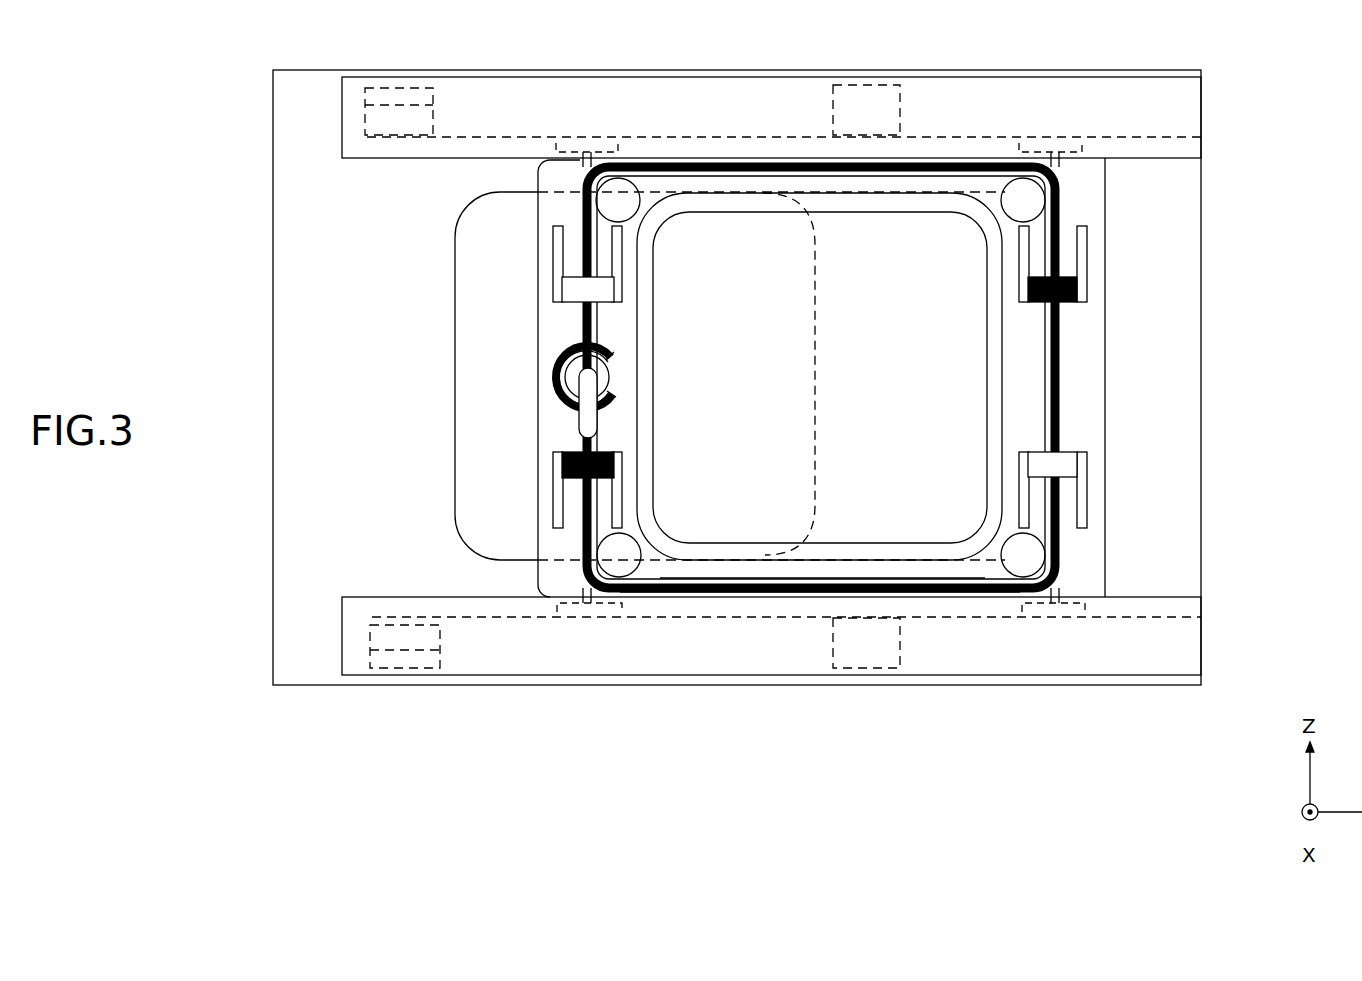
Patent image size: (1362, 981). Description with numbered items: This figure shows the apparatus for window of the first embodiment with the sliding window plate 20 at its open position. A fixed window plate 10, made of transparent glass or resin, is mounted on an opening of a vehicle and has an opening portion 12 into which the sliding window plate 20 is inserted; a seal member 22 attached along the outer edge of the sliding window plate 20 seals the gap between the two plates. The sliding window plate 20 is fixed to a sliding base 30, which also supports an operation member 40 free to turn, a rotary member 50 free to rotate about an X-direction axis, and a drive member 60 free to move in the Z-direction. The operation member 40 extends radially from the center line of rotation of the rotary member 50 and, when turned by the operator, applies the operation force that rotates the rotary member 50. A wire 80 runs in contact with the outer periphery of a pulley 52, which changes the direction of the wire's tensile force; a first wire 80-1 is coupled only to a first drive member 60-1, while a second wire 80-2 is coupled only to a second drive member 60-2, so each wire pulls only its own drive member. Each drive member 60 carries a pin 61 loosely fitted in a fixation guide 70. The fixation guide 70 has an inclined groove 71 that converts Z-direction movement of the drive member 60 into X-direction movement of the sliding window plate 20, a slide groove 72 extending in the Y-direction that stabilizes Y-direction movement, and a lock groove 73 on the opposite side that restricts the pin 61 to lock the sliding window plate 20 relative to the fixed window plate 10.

The fixed window plate 10 is at (1192, 388).
The opening portion 12 is at (455, 230).
The sliding window plate 20 is at (818, 232).
The seal member 22 is at (766, 200).
The sliding base 30 is at (709, 175).
The operation member 40 is at (558, 355).
The rotary member 50 is at (583, 383).
The pulley 52 is at (642, 193).
The drive member 60 is at (688, 378).
The first drive member 60-1 is at (556, 290).
The second drive member 60-2 is at (556, 465).
The pin 61 is at (604, 178).
The fixation guide 70 is at (1197, 108).
The inclined groove 71 is at (365, 120).
The slide groove 72 is at (367, 149).
The lock groove 73 is at (365, 99).
The wire 80 is at (820, 658).
The first wire 80-1 is at (872, 566).
The second wire 80-2 is at (752, 593).